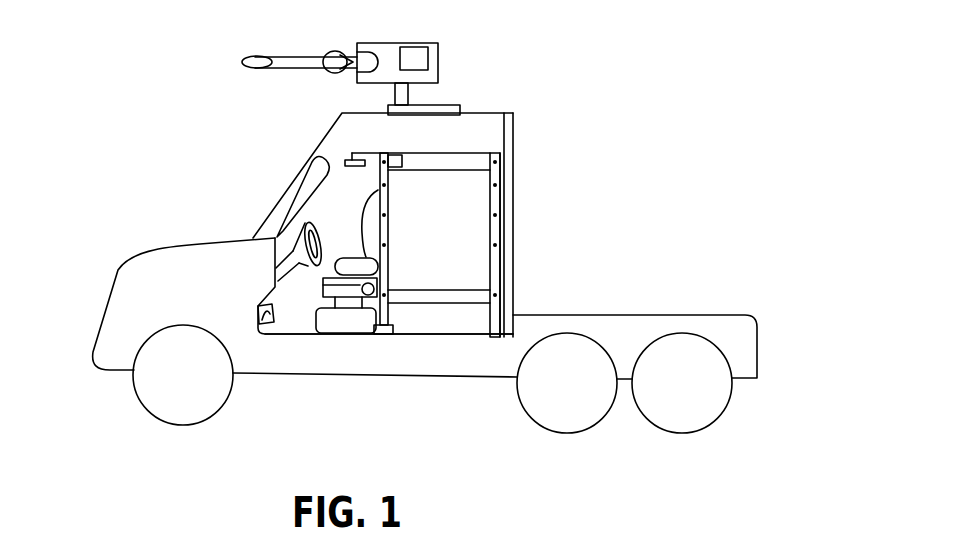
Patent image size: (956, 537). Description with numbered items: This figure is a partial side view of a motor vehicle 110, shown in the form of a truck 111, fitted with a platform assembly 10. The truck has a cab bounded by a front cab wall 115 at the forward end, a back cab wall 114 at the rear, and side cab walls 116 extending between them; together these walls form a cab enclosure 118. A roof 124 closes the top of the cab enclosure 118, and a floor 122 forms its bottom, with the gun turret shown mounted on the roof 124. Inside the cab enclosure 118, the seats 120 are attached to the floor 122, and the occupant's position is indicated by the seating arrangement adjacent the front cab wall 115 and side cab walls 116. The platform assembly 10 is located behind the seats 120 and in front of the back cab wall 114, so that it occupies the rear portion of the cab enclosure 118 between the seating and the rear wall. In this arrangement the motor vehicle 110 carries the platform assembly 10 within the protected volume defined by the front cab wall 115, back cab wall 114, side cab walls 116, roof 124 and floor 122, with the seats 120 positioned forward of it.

The motor vehicle 110 is at (137, 160).
The truck 111 is at (127, 297).
The front cab wall 115 is at (323, 135).
The side cab walls 116 is at (327, 200).
The cab enclosure 118 is at (462, 137).
The roof 124 is at (492, 115).
The platform assembly 10 is at (473, 163).
The back cab wall 114 is at (504, 232).
The seats 120 is at (347, 287).
The floor 122 is at (282, 334).